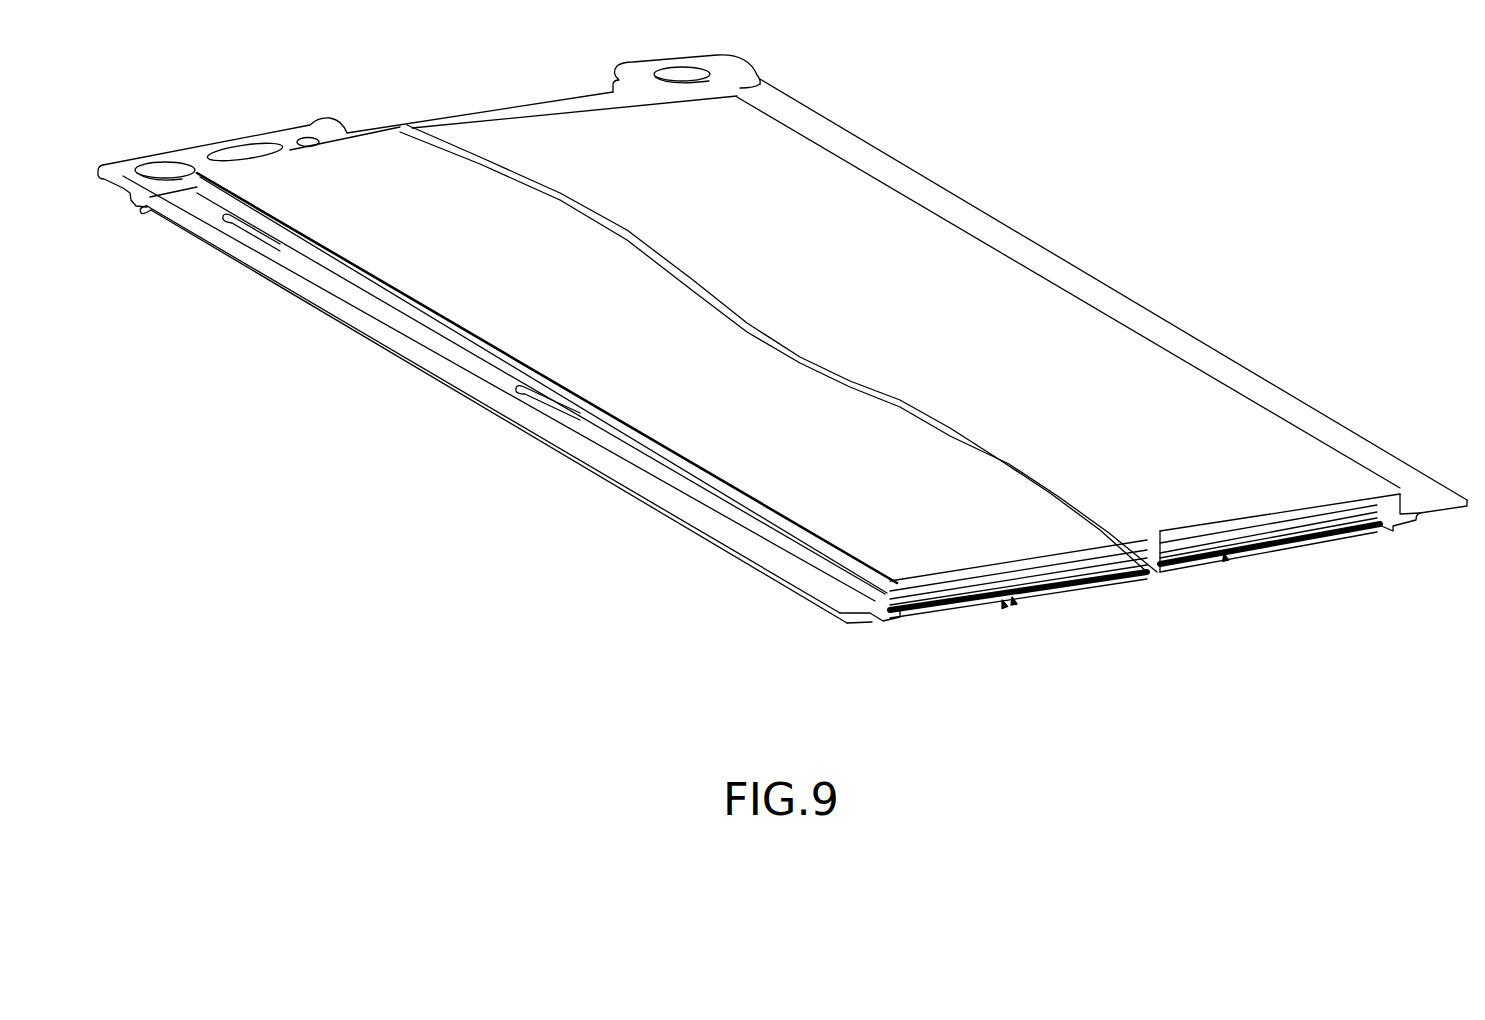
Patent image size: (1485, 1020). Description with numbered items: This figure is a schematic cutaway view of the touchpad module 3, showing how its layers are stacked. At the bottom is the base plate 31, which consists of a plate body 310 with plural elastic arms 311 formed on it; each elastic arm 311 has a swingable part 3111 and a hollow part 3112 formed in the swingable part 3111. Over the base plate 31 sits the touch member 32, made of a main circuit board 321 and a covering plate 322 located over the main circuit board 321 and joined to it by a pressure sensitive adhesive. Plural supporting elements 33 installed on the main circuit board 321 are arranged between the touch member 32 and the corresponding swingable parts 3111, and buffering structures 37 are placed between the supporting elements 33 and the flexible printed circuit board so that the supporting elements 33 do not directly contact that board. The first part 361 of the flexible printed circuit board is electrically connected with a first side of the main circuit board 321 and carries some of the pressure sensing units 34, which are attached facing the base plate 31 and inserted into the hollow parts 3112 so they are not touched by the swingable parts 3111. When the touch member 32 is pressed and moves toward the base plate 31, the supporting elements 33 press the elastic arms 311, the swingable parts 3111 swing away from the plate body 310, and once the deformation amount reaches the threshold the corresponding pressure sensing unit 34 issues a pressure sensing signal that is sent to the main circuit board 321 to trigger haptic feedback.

The touchpad module 3 is at (1336, 321).
The base plate 31 is at (995, 109).
The plate body 310 is at (1127, 617).
The elastic arms 311 is at (1410, 627).
The swingable part 3111 is at (923, 612).
The hollow part 3112 is at (977, 606).
The touch member 32 is at (1129, 109).
The main circuit board 321 is at (1187, 535).
The covering plate 322 is at (1280, 515).
The supporting elements 33 is at (950, 595).
The pressure sensing units 34 is at (997, 590).
The buffering structures 37 is at (1083, 570).
The first part 361 is at (1003, 602).